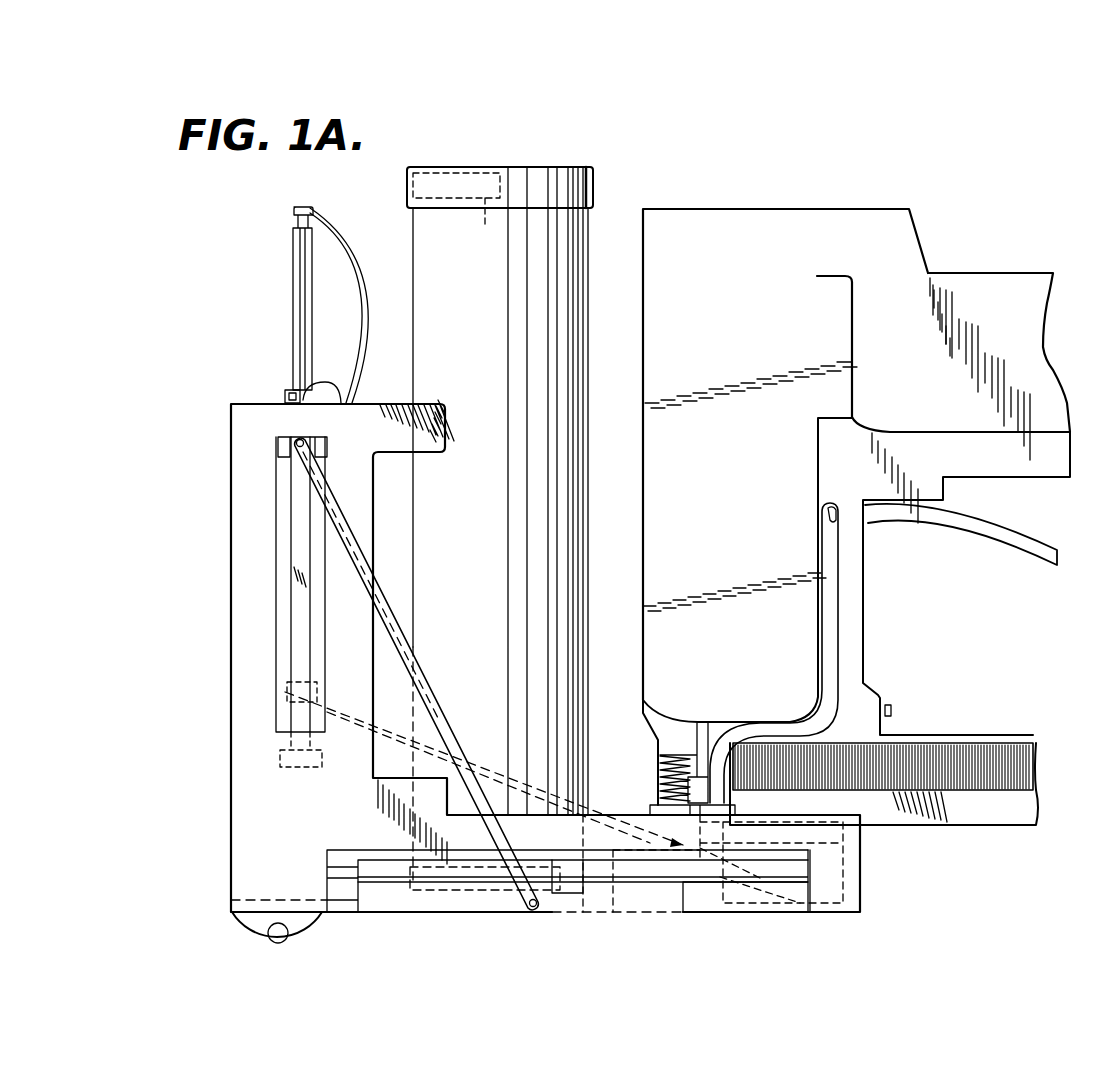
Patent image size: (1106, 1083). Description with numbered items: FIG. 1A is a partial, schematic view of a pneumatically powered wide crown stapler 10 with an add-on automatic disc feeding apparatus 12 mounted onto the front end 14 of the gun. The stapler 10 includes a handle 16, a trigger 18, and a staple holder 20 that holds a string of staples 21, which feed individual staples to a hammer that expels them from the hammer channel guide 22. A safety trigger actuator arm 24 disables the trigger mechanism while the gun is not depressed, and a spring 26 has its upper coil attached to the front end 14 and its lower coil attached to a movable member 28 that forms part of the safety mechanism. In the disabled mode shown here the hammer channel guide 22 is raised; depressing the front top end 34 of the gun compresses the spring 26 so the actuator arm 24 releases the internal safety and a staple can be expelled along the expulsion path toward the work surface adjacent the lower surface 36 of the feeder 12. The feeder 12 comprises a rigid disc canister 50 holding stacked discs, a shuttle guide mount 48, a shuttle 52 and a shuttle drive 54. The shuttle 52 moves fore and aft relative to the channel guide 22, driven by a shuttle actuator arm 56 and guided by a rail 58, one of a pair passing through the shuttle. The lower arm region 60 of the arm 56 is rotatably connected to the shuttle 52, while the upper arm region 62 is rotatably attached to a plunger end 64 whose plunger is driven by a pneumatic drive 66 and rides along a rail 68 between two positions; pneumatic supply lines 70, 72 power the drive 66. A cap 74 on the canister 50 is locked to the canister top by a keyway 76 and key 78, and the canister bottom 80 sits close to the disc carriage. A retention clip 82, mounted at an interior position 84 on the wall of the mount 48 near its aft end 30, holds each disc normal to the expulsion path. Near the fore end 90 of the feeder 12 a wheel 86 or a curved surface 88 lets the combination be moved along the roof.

The wide crown stapler 10 is at (835, 522).
The automatic disc feeding apparatus 12 is at (260, 392).
The front end 14 is at (637, 708).
The handle 16 is at (1003, 273).
The trigger 18 is at (1000, 541).
The staple holder 20 is at (990, 827).
The string of staples 21 is at (933, 742).
The hammer channel guide 22 is at (746, 913).
The safety trigger actuator arm 24 is at (843, 632).
The spring 26 is at (658, 780).
The movable member 28 is at (650, 805).
The aft end 30 is at (870, 881).
The front top end 34 is at (727, 209).
The lower surface 36 is at (820, 914).
The shuttle guide mount 48 is at (610, 882).
The disc canister 50 is at (521, 509).
The shuttle 52 is at (440, 915).
The shuttle drive 54 is at (322, 304).
The shuttle actuator arm 56 is at (430, 690).
The rail 58 is at (652, 884).
The lower arm region 60 is at (533, 915).
The upper arm region 62 is at (306, 440).
The plunger end 64 is at (282, 452).
The pneumatic drive 66 is at (292, 250).
The rail 68 is at (290, 553).
The pneumatic supply line 70 is at (342, 242).
The pneumatic supply line 72 is at (332, 385).
The cap 74 is at (594, 190).
The keyway 76 is at (522, 176).
The key 78 is at (457, 211).
The bottom of canister 80 is at (567, 896).
The retention clip 82 is at (727, 913).
The interior position 84 is at (845, 916).
The wheel 86 is at (287, 942).
The curved surface 88 is at (313, 923).
The fore end 90 is at (228, 884).